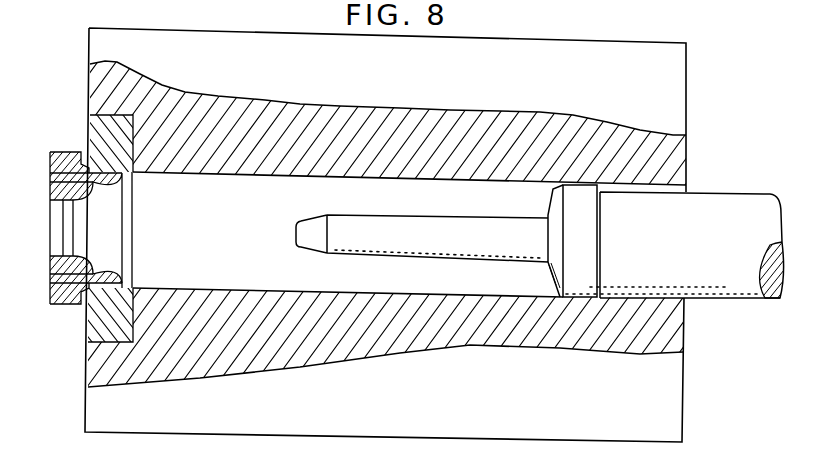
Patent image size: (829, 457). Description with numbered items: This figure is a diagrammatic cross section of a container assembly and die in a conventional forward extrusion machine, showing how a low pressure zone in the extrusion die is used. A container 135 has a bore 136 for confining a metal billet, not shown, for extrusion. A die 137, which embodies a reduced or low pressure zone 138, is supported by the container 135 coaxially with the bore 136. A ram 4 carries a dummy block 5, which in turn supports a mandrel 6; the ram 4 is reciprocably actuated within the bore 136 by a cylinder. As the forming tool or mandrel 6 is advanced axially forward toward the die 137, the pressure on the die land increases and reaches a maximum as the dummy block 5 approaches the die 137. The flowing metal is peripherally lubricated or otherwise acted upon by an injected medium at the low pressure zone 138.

The container 135 is at (556, 47).
The bore 136 is at (205, 176).
The die 137 is at (72, 151).
The low pressure zone 138 is at (100, 270).
The ram 4 is at (712, 195).
The dummy block 5 is at (588, 228).
The mandrel 6 is at (398, 256).